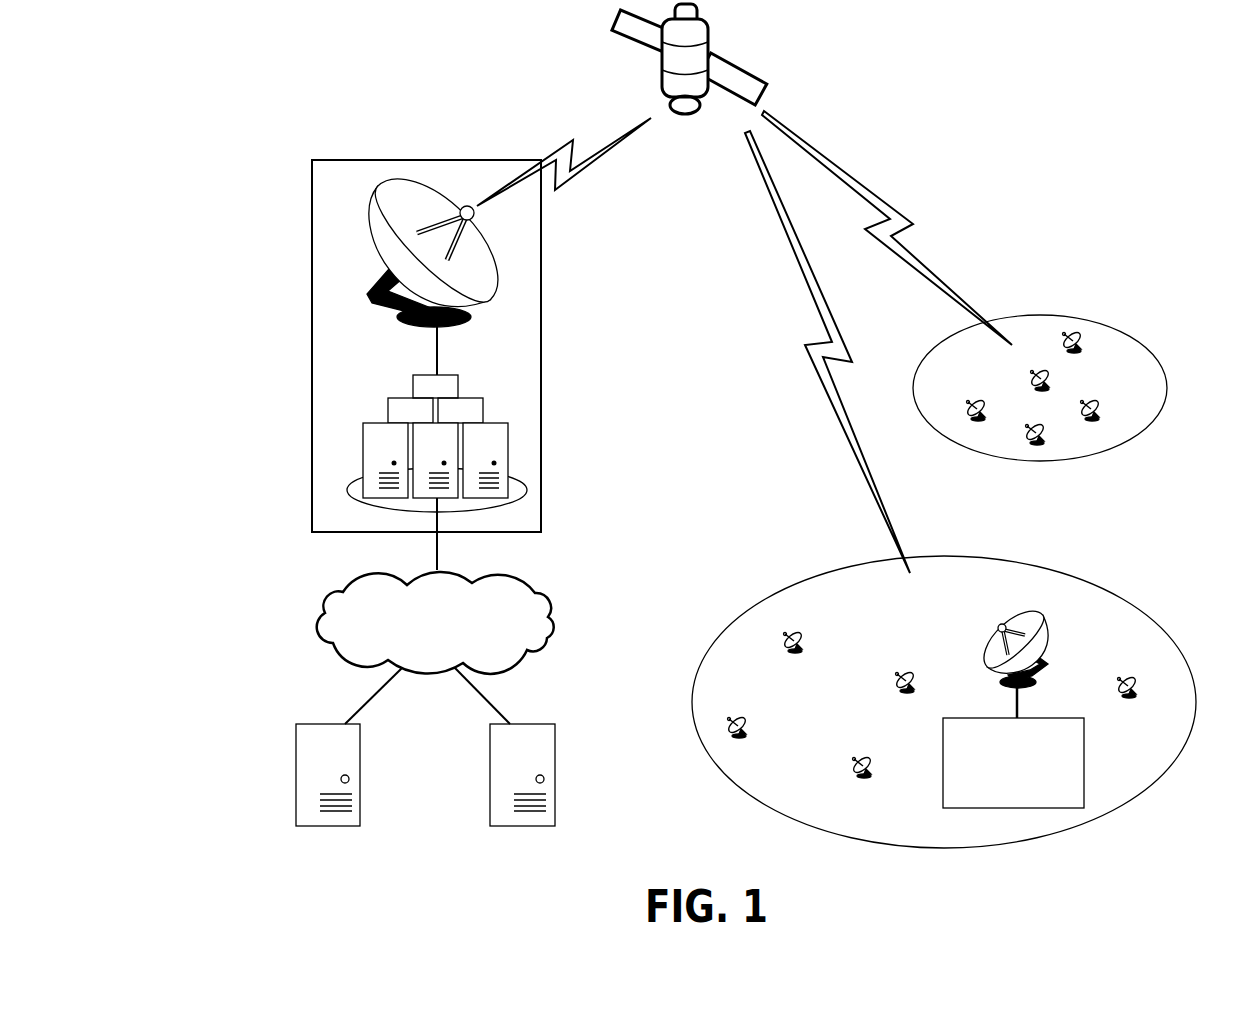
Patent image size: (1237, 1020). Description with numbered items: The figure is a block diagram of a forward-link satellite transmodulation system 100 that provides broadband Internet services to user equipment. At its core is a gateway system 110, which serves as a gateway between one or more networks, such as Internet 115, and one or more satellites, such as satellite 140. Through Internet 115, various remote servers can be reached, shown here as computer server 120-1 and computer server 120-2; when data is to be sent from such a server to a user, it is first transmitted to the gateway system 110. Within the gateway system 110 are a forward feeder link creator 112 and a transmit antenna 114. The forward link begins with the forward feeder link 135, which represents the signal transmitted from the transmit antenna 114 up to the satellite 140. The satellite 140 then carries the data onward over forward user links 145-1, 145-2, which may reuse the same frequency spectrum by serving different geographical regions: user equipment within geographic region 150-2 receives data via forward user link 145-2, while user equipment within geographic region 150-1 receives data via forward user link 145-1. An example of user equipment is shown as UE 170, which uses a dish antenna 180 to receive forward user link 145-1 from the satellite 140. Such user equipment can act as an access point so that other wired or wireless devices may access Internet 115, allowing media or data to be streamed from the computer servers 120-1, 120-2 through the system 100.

The forward-link satellite transmodulation system 100 is at (206, 114).
The gateway system 110 is at (311, 372).
The forward feeder link creator 112 is at (382, 420).
The transmit antenna 114 is at (380, 284).
The Internet 115 is at (345, 588).
The computer server 120-1 is at (325, 724).
The computer server 120-2 is at (490, 778).
The forward feeder link 135 is at (568, 143).
The satellite 140 is at (710, 54).
The forward user link 145-1 is at (807, 346).
The forward user link 145-2 is at (912, 222).
The geographic region 150-1 is at (1139, 610).
The geographic region 150-2 is at (1127, 334).
The user equipment 170 is at (1074, 806).
The dish antenna 180 is at (1031, 613).